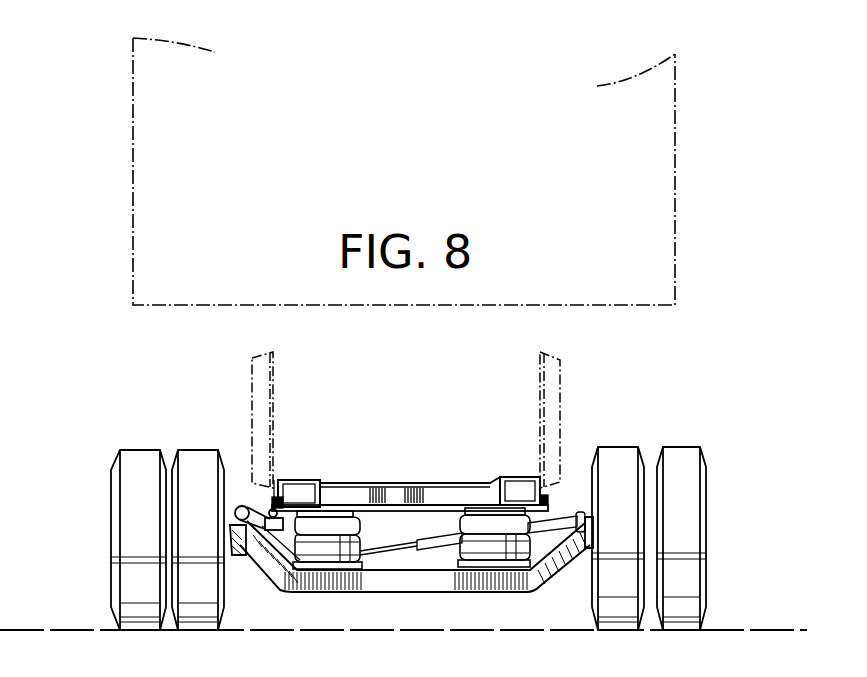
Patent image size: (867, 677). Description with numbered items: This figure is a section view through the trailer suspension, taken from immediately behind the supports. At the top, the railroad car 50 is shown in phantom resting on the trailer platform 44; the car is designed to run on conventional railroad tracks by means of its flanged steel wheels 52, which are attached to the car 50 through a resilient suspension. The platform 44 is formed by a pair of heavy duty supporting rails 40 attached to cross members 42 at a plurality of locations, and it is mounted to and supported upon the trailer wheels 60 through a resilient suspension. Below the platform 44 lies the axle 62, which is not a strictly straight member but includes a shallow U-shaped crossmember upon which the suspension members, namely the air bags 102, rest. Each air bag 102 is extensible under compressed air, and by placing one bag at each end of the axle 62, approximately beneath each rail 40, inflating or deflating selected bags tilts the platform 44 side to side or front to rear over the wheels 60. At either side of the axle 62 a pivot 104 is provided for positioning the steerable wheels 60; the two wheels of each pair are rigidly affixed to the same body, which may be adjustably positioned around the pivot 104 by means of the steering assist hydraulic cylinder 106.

The railroad car 50 is at (381, 307).
The steel wheels 52 is at (280, 396).
The trailer wheels 60 is at (200, 450).
The supporting rails 40 is at (305, 479).
The cross members 42 is at (450, 483).
The platform 44 is at (411, 476).
The steering assist hydraulic cylinder 106 is at (410, 518).
The air bag 102 is at (308, 543).
The axle 62 is at (391, 586).
The pivot 104 is at (241, 557).